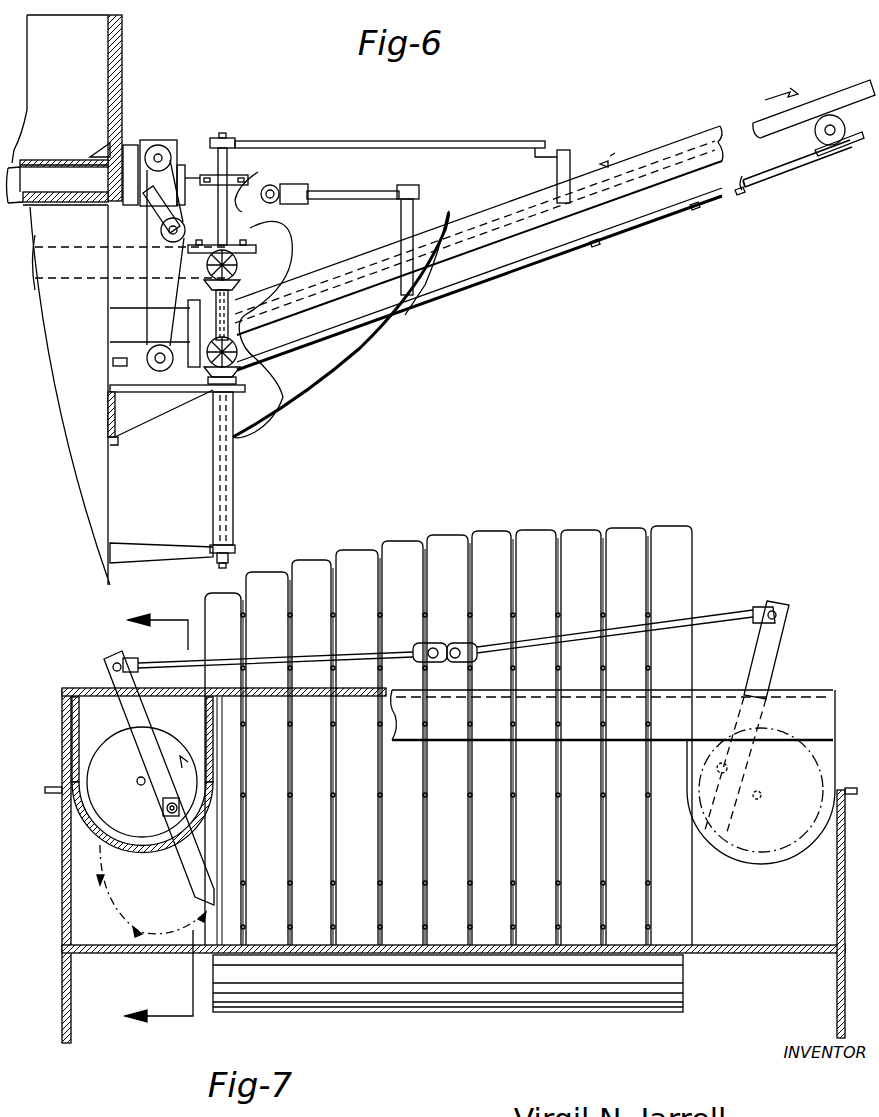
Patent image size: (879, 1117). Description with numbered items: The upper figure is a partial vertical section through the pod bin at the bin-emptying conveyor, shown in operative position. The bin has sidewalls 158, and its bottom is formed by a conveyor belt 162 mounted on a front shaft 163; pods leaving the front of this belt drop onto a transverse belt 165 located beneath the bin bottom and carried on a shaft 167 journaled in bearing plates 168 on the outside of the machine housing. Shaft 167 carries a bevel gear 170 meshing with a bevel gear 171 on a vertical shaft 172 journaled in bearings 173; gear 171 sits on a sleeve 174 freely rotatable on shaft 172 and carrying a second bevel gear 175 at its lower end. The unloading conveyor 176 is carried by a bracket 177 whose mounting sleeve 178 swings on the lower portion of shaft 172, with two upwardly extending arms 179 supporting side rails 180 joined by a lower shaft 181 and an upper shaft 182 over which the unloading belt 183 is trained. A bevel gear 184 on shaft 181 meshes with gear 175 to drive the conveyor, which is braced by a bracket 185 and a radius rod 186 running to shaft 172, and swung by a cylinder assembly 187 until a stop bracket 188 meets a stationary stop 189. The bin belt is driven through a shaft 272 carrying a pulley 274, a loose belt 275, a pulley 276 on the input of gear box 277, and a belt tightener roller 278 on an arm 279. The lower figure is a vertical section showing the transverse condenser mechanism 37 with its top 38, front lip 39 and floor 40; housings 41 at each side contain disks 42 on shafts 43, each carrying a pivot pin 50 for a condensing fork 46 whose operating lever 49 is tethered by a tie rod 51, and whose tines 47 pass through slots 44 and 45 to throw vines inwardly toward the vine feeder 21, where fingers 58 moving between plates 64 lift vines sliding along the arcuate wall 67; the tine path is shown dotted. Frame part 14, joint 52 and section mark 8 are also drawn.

In FIG. 6, the sidewalls 158 is at (123, 48).
In FIG. 6, the conveyor belt 162 is at (30, 175).
In FIG. 6, the shaft 163 is at (22, 160).
In FIG. 6, the gear box 277 is at (140, 135).
In FIG. 6, the pulley 276 is at (162, 153).
In FIG. 6, the belt tightener roller 278 is at (195, 238).
In FIG. 6, the pulley 274 is at (148, 358).
In FIG. 6, the arm 279 is at (160, 215).
In FIG. 6, the shaft 272 is at (150, 370).
In FIG. 6, the vertical shaft 172 is at (232, 150).
In FIG. 6, the bearings 173 is at (247, 163).
In FIG. 6, the frame 14 is at (115, 440).
In FIG. 6, the shaft 167 is at (240, 200).
In FIG. 6, the bevel gear 170 is at (278, 260).
In FIG. 6, the lower shaft 181 is at (265, 350).
In FIG. 6, the mounting sleeve 178 is at (233, 490).
In FIG. 6, the radius rod 186 is at (445, 141).
In FIG. 6, the bracket 185 is at (570, 160).
In FIG. 6, the cylinder assembly 187 is at (302, 188).
In FIG. 6, the bearing plates 168 is at (285, 222).
In FIG. 6, the bevel gear 171 is at (280, 290).
In FIG. 6, the stop bracket 188 is at (238, 305).
In FIG. 6, the stationary stop 189 is at (118, 328).
In FIG. 6, the belt 275 is at (110, 308).
In FIG. 6, the transverse belt 165 is at (132, 262).
In FIG. 6, the bevel gear 175 is at (255, 412).
In FIG. 6, the bevel gear 184 is at (280, 398).
In FIG. 6, the bracket 177 is at (385, 335).
In FIG. 6, the arms 179 is at (425, 313).
In FIG. 6, the side rails 180 is at (668, 152).
In FIG. 6, the sleeve 174 is at (250, 322).
In FIG. 6, the unloading conveyor 176 is at (620, 237).
In FIG. 6, the unloading belt 183 is at (760, 180).
In FIG. 6, the upper shaft 182 is at (830, 138).
In FIG. 7, the floor 40 is at (696, 946).
In FIG. 7, the housings 41 is at (77, 738).
In FIG. 7, the transverse condenser mechanism 37 is at (824, 690).
In FIG. 7, the front lip 39 is at (637, 693).
In FIG. 7, the disks 42 is at (173, 745).
In FIG. 7, the shafts 43 is at (137, 785).
In FIG. 7, the pivot pin 50 is at (163, 810).
In FIG. 7, the condensing forks 46 is at (123, 721).
In FIG. 7, the operating lever 49 is at (143, 752).
In FIG. 7, the tie rod 51 is at (170, 665).
In FIG. 7, the slot 44 is at (148, 695).
In FIG. 7, the top 38 is at (262, 690).
In FIG. 7, the coupling joint 52 is at (447, 643).
In FIG. 7, the plates 64 is at (492, 548).
In FIG. 7, the vine feeder 21 is at (697, 549).
In FIG. 7, the vine engaging fingers 58 is at (370, 798).
In FIG. 7, the slot 45 is at (90, 838).
In FIG. 7, the tines 47 is at (187, 882).
In FIG. 7, the arcuate wall 67 is at (385, 1055).
In FIG. 7, the section line 8 is at (159, 820).